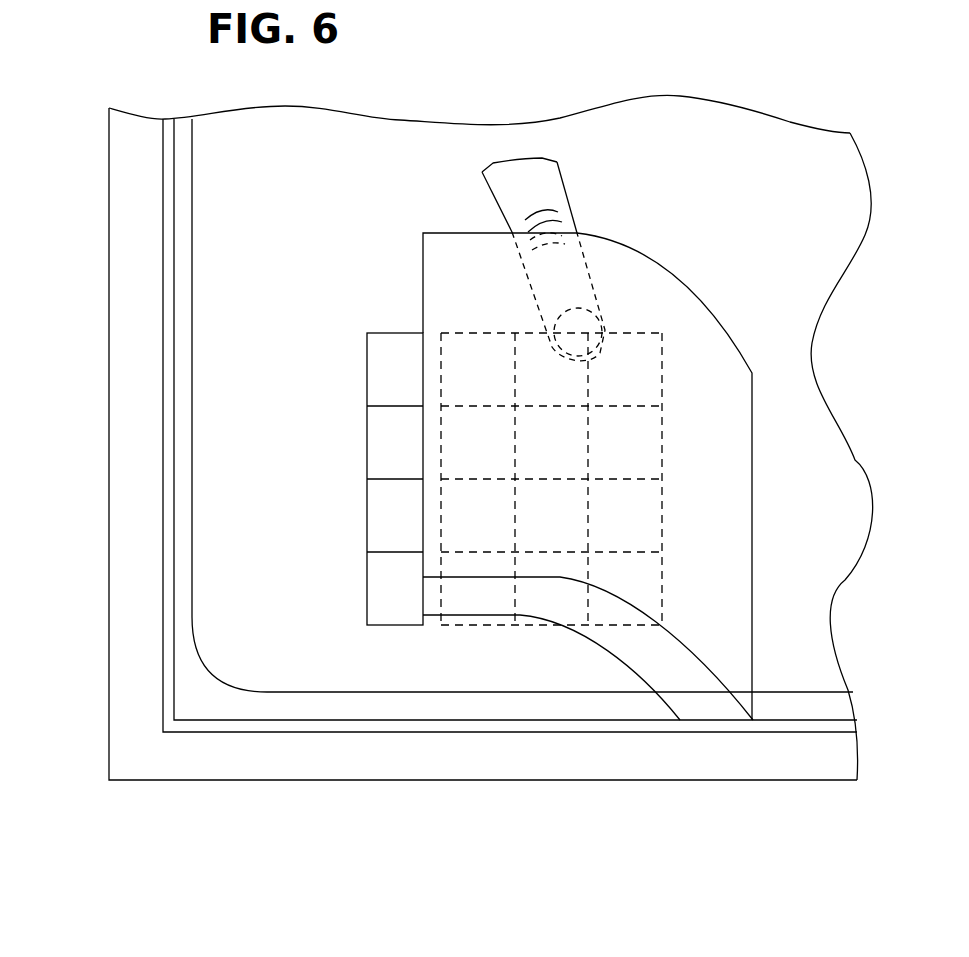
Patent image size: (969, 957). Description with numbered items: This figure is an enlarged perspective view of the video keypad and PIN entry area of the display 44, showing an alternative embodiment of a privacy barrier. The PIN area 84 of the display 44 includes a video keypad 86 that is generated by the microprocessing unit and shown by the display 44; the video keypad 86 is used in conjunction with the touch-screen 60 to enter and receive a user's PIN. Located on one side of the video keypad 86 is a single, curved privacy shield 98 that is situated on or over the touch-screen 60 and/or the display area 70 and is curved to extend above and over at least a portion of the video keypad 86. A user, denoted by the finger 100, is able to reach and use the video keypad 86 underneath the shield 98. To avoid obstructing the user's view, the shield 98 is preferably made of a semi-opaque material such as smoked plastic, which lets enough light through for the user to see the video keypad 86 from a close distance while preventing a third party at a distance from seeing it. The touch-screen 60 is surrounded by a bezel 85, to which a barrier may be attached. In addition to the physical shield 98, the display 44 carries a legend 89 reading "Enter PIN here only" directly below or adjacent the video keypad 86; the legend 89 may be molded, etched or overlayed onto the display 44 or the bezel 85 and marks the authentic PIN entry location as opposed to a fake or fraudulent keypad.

The display 44 is at (100, 224).
The touch-screen 60 is at (174, 299).
The display area 70 is at (163, 525).
The PIN area 84 is at (797, 277).
The bezel 85 is at (203, 705).
The video keypad 86 is at (386, 315).
The legend 89 is at (370, 762).
The privacy shield 98 is at (730, 523).
The finger 100 is at (522, 167).